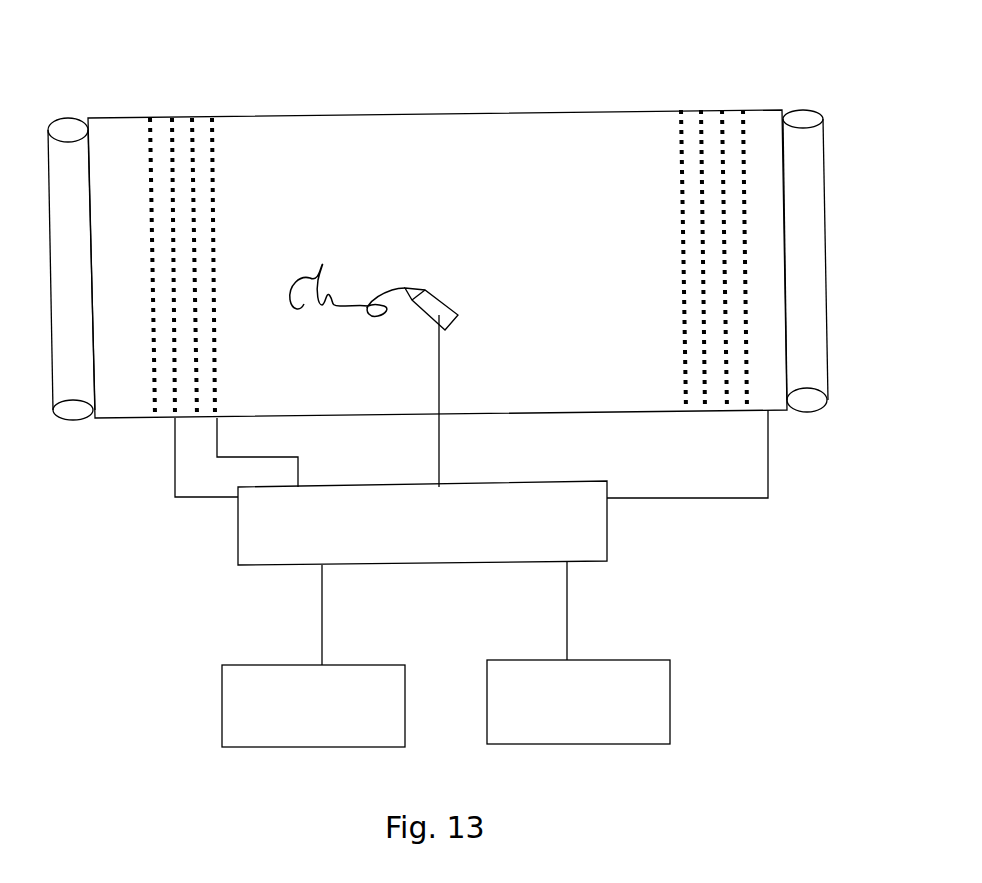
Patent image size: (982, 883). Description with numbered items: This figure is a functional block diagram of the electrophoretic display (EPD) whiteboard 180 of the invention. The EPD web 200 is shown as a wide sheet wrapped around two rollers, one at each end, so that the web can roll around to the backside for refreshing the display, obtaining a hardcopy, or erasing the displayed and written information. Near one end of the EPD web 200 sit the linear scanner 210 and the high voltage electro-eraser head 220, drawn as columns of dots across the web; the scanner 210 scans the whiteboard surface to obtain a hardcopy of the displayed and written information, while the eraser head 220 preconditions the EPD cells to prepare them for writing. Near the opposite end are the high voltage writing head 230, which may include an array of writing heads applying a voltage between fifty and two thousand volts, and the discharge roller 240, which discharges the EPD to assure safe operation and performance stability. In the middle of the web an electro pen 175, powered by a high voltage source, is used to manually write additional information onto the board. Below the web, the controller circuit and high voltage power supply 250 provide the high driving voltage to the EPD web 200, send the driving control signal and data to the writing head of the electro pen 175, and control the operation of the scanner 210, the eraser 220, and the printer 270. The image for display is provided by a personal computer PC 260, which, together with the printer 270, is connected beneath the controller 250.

The electro pen 175 is at (430, 297).
The electrophoretic display (EPD) whiteboard 180 is at (828, 442).
The EPD web 200 is at (425, 120).
The linear scanner 210 is at (155, 417).
The high voltage electro-eraser head 220 is at (212, 117).
The high voltage writing head 230 is at (680, 110).
The discharge roller 240 is at (742, 110).
The controller circuit and high voltage power supply 250 is at (600, 497).
The personal computer 260 is at (355, 678).
The printer 270 is at (641, 676).